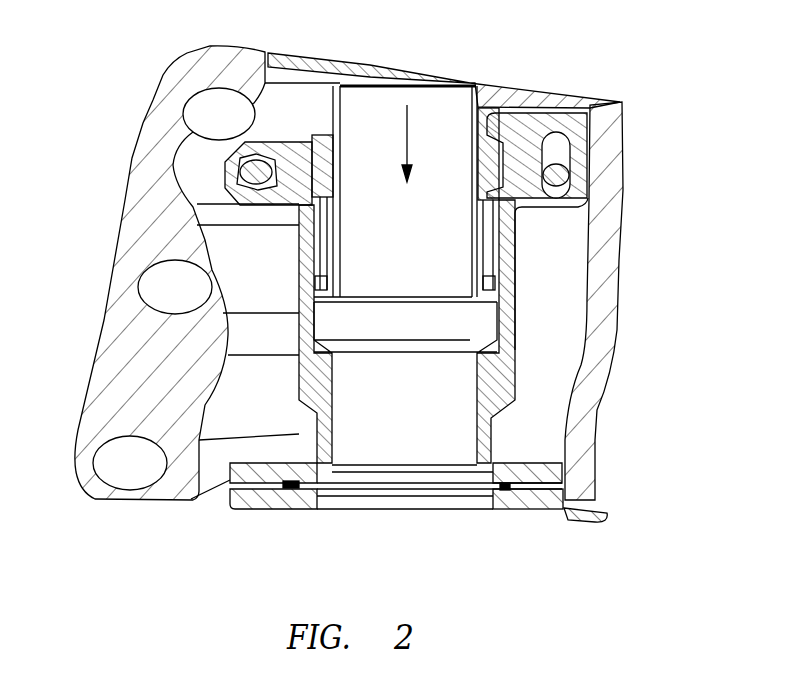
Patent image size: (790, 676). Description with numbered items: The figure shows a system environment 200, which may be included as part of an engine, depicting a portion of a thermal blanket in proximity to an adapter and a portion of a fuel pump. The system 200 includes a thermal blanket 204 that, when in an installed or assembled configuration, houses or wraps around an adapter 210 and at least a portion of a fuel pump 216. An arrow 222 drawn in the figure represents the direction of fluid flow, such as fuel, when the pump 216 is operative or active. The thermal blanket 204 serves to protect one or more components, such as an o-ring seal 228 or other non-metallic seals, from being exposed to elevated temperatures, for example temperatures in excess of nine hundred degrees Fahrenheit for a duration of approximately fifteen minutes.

The system environment 200 is at (670, 88).
The thermal blanket 204 is at (126, 218).
The adapter 210 is at (405, 325).
The fuel pump 216 is at (410, 496).
The arrow 222 is at (405, 128).
The o-ring seal 228 is at (495, 284).